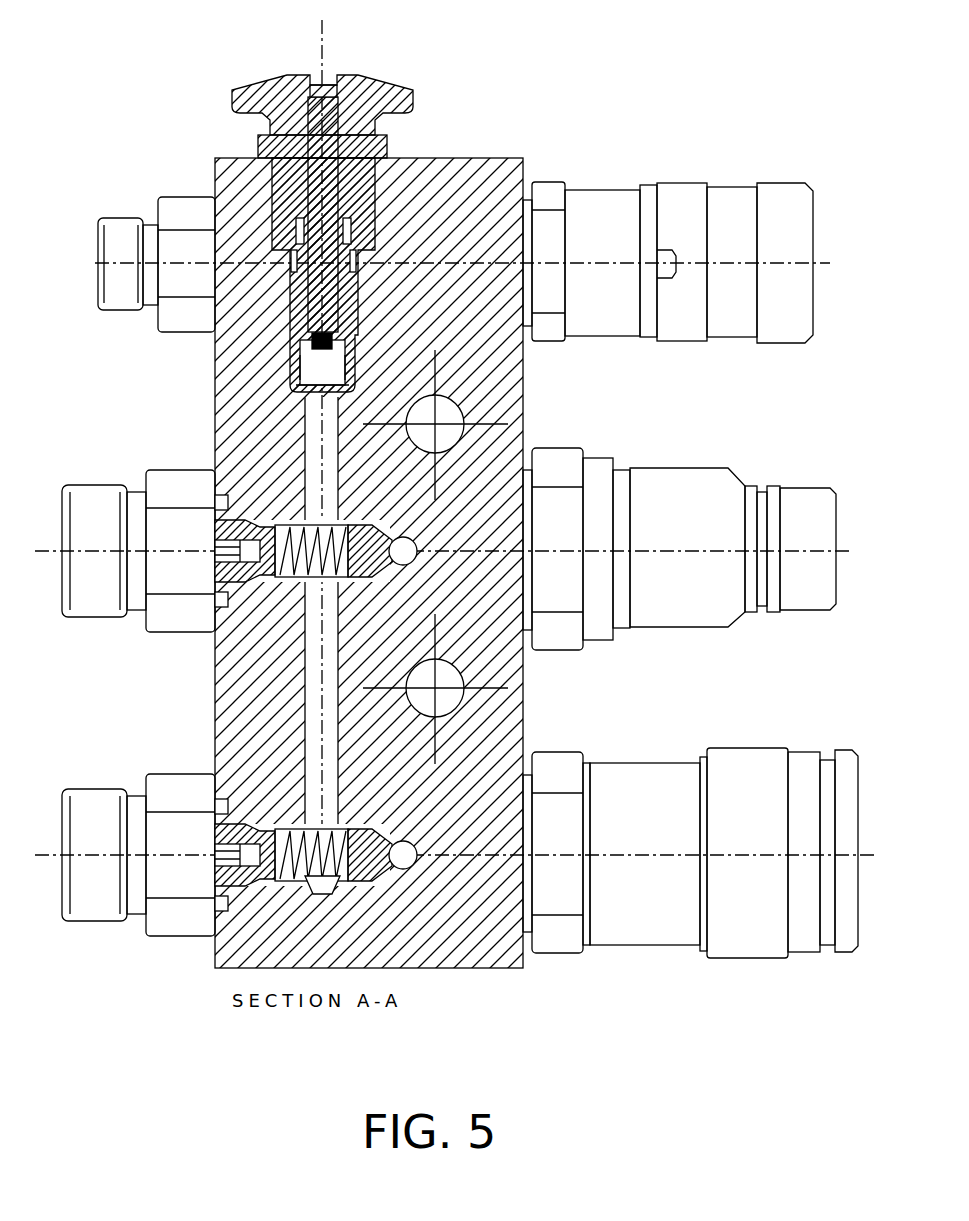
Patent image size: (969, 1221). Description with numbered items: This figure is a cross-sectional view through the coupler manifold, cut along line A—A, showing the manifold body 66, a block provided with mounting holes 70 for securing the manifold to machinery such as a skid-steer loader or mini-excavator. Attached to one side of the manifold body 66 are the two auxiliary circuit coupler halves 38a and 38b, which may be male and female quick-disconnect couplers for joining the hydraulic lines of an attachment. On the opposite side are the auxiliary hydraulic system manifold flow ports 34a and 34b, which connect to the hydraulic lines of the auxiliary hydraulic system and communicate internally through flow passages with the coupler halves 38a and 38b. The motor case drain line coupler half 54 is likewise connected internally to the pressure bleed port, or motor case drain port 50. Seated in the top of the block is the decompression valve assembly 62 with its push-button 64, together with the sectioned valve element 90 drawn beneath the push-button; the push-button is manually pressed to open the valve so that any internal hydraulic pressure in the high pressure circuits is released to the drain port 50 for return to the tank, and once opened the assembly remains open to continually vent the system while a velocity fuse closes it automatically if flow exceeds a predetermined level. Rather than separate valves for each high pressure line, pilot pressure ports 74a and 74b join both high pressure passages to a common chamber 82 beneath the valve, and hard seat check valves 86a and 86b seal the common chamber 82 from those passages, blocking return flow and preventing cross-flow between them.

The auxiliary hydraulic system manifold flow port 34a is at (97, 485).
The auxiliary hydraulic system manifold flow port 34b is at (105, 788).
The auxiliary circuit coupler half 38a is at (712, 468).
The auxiliary circuit coupler half 38b is at (745, 748).
The motor case drain port 50 is at (108, 215).
The motor case drain line coupler half 54 is at (773, 183).
The decompression valve assembly 62 is at (253, 68).
The push-button 64 is at (360, 75).
The manifold body 66 is at (468, 158).
The mounting holes 70 is at (452, 443).
The pilot pressure port 74a is at (405, 567).
The pilot pressure port 74b is at (412, 848).
The common chamber 82 is at (320, 704).
The hard seat check valve 86a is at (303, 520).
The hard seat check valve 86b is at (240, 925).
The valve cartridge 90 is at (300, 322).